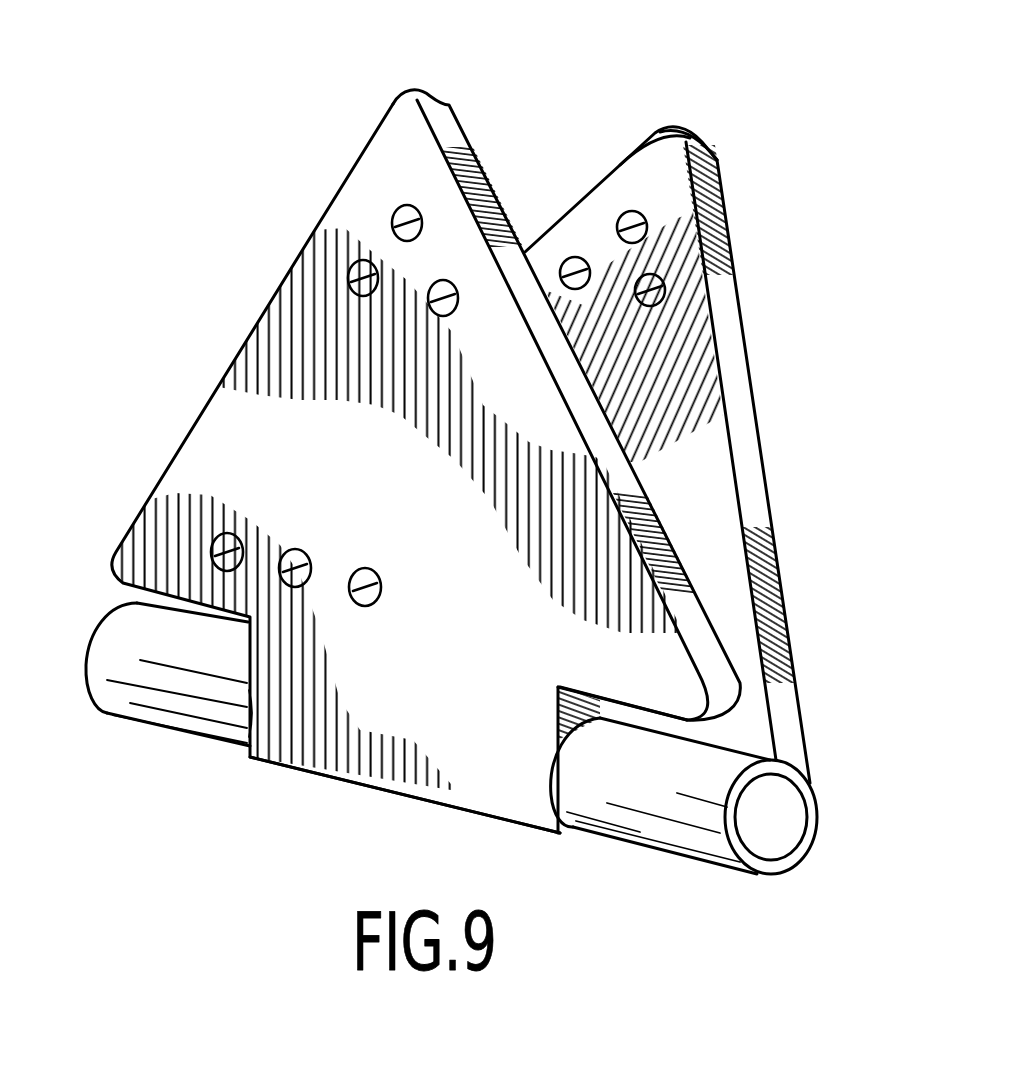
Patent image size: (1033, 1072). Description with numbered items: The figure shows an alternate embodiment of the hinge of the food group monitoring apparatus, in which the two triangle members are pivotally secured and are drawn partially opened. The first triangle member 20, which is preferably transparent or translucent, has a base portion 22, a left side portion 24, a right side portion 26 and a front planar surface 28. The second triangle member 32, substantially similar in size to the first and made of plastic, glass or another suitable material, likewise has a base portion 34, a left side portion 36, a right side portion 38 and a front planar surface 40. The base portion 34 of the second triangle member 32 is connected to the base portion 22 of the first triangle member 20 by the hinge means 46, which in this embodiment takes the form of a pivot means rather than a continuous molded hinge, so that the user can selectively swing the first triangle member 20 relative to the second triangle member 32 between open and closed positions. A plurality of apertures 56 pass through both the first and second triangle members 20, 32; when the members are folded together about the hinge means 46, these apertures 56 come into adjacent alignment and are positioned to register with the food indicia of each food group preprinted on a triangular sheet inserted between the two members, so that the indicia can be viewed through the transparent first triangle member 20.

The first triangle member 20 is at (280, 371).
The base portion 22 is at (507, 782).
The left side portion 24 is at (313, 233).
The right side portion 26 is at (450, 102).
The front planar surface 28 is at (407, 170).
The second triangle member 32 is at (693, 450).
The base portion 34 is at (137, 707).
The left side portion 36 is at (640, 137).
The right side portion 38 is at (716, 238).
The front planar surface 40 is at (652, 168).
The hinge means 46 is at (243, 747).
The apertures 56 is at (650, 290).